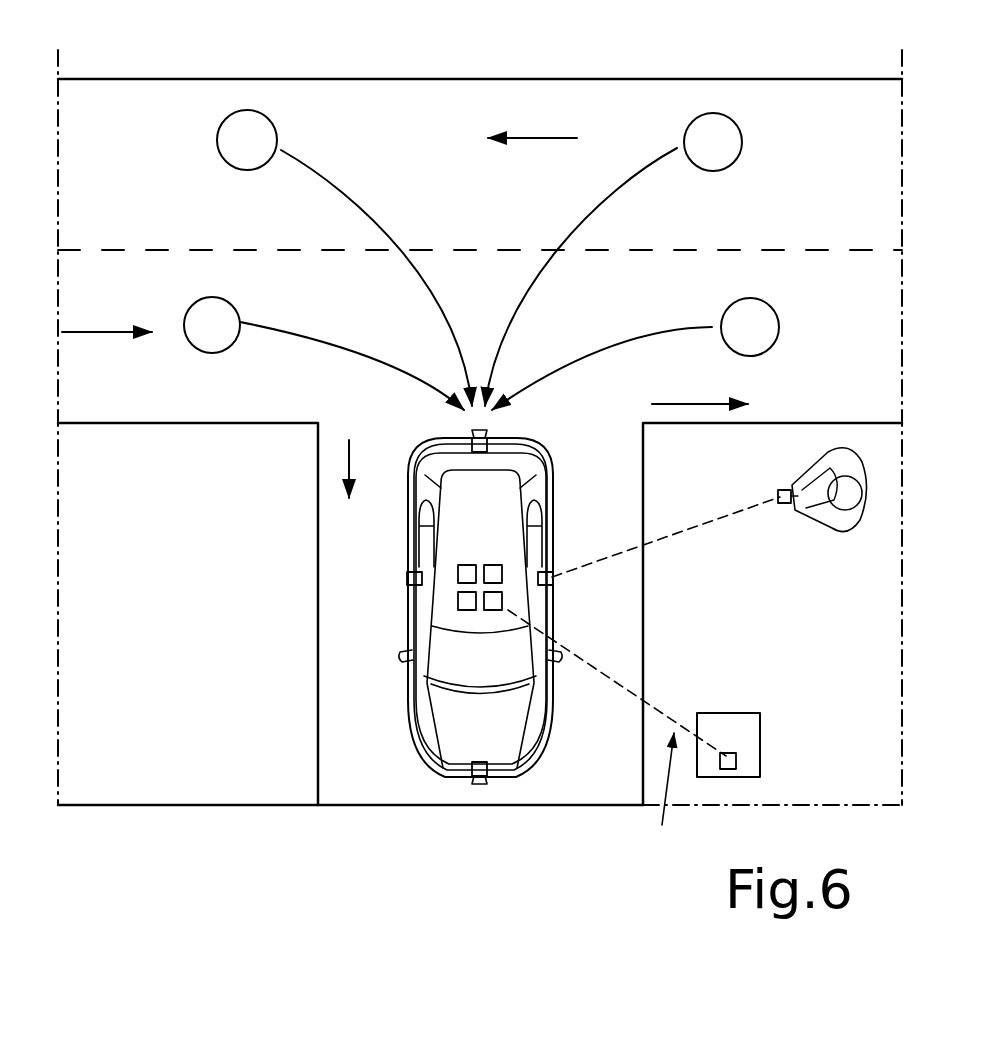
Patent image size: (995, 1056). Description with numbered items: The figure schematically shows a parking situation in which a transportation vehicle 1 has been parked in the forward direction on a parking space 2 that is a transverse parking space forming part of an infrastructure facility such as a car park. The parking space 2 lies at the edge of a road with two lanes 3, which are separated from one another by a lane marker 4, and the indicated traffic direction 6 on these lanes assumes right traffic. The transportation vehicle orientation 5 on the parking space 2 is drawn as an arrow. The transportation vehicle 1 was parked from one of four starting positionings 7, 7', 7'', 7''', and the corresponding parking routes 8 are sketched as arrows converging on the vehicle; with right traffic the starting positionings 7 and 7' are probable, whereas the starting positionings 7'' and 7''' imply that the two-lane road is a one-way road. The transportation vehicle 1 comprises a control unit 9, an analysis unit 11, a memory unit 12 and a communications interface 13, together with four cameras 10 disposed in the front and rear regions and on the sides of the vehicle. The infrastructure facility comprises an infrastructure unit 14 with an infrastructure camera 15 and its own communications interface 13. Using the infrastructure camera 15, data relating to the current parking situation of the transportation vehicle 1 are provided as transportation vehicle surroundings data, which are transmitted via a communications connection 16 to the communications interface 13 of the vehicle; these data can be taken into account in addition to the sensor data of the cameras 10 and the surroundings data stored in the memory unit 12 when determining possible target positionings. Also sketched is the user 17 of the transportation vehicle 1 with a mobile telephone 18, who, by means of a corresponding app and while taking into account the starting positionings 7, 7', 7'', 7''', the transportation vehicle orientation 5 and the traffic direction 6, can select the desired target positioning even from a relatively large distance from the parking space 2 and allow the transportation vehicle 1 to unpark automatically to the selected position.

The transportation vehicle 1 is at (596, 484).
The parking space 2 is at (553, 787).
The lanes 3 is at (848, 172).
The lane marker 4 is at (738, 250).
The transportation vehicle orientation 5 is at (349, 457).
The traffic direction 6 is at (545, 138).
The starting positioning 7 is at (212, 325).
The starting positioning 7' is at (713, 142).
The starting positioning 7'' is at (247, 140).
The starting positioning 7''' is at (750, 327).
The parking routes 8 is at (372, 210).
The control unit 9 is at (457, 578).
The cameras 10 is at (488, 436).
The analysis unit 11 is at (504, 586).
The memory unit 12 is at (457, 600).
The communications interface 13 is at (507, 603).
The infrastructure unit 14 is at (786, 718).
The infrastructure camera 15 is at (663, 797).
The communications connection 16 is at (706, 525).
The user 17 is at (846, 522).
The mobile telephone 18 is at (787, 512).